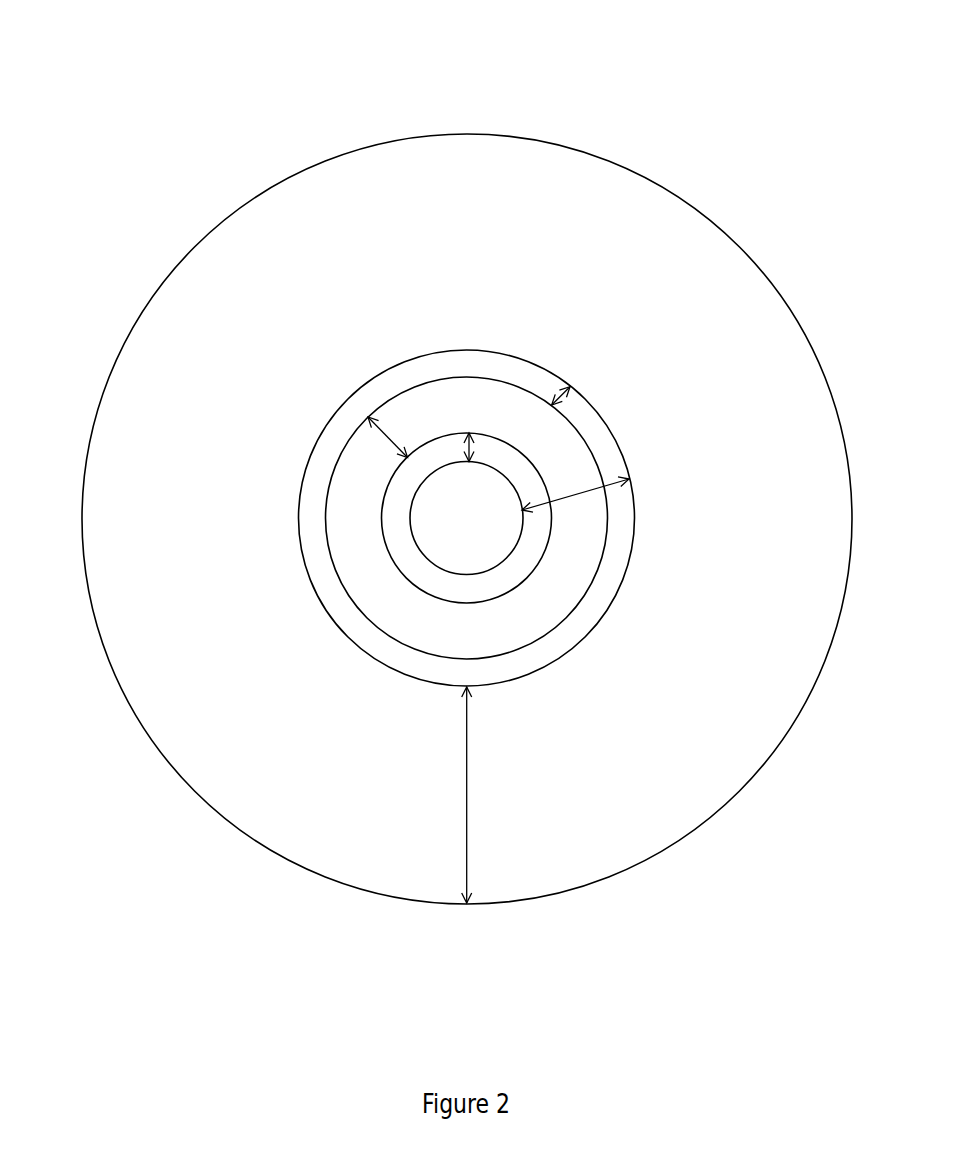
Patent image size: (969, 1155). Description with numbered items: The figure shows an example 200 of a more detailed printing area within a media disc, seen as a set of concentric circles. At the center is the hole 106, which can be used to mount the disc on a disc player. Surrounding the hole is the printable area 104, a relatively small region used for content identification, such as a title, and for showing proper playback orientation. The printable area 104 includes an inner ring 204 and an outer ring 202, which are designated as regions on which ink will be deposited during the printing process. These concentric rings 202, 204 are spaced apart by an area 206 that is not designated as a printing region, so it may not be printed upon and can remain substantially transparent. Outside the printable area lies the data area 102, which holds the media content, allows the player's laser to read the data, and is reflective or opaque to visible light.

The example of a more detailed printing area within a disc 200 is at (178, 27).
The hole 106 is at (485, 530).
The data area 102 is at (467, 793).
The printable area 104 is at (577, 495).
The outer ring 202 is at (557, 396).
The inner ring 204 is at (477, 449).
The area 206 is at (387, 438).